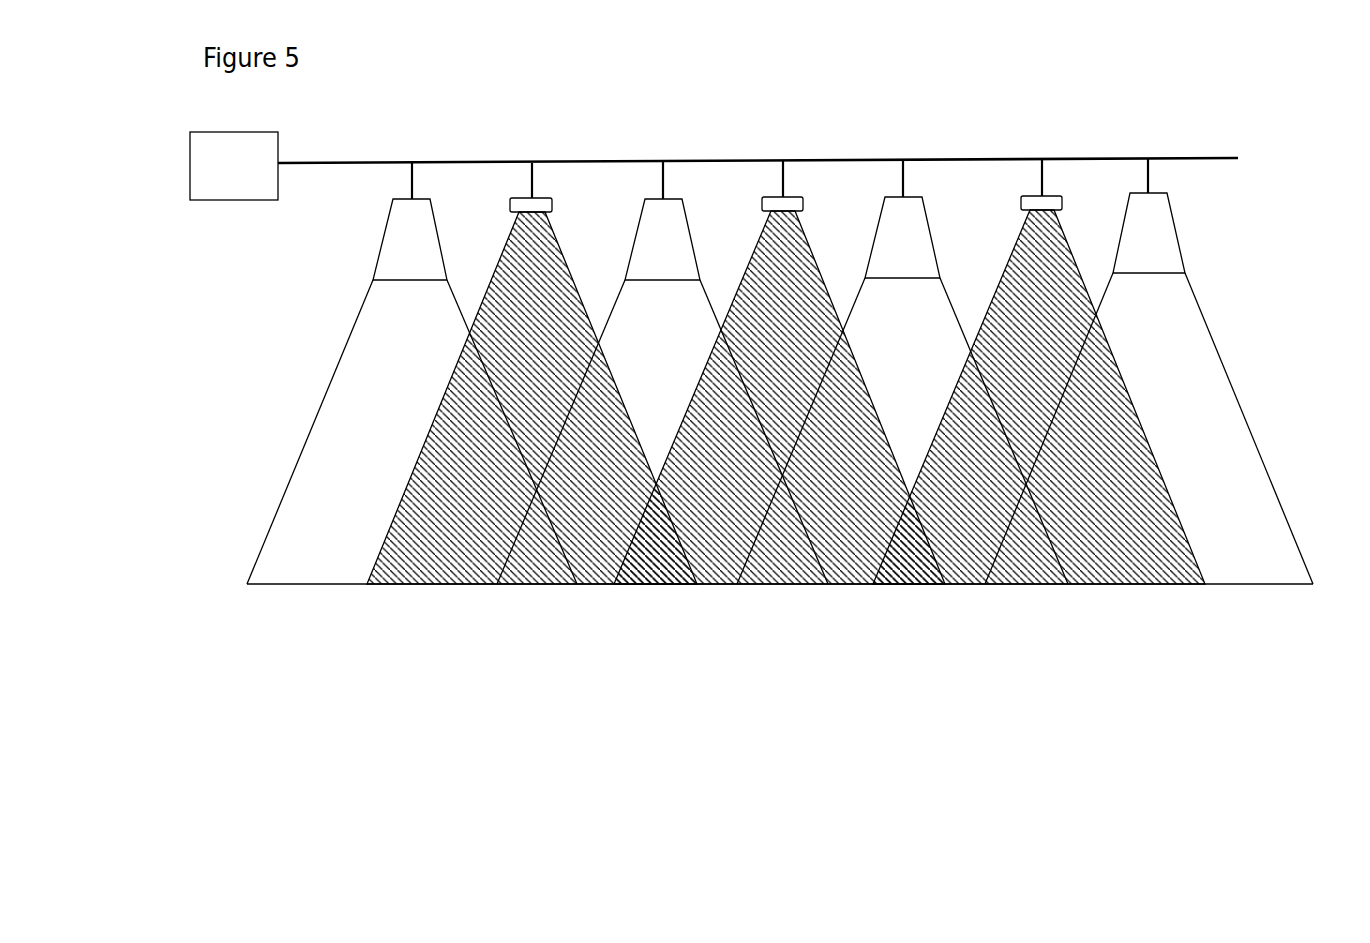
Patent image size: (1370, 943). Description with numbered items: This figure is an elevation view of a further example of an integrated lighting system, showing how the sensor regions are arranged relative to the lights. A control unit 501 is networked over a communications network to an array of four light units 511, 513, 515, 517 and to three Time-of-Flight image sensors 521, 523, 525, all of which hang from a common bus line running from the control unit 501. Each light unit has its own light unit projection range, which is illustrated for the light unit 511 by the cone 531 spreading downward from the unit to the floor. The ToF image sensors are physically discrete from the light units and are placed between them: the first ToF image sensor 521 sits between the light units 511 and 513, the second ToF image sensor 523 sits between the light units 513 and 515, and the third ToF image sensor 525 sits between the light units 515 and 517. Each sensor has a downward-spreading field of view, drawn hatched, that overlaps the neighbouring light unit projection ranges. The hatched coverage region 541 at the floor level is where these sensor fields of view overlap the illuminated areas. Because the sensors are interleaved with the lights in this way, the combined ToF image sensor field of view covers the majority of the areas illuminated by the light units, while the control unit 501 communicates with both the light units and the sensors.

The control unit 501 is at (234, 166).
The light unit 511 is at (410, 221).
The light unit 513 is at (662, 373).
The light unit 515 is at (902, 372).
The light unit 517 is at (1149, 371).
The first ToF image sensor 521 is at (541, 196).
The second ToF image sensor 523 is at (791, 196).
The third ToF image sensor 525 is at (1049, 194).
The cone 531 is at (343, 381).
The sensor coverage area 541 is at (447, 548).